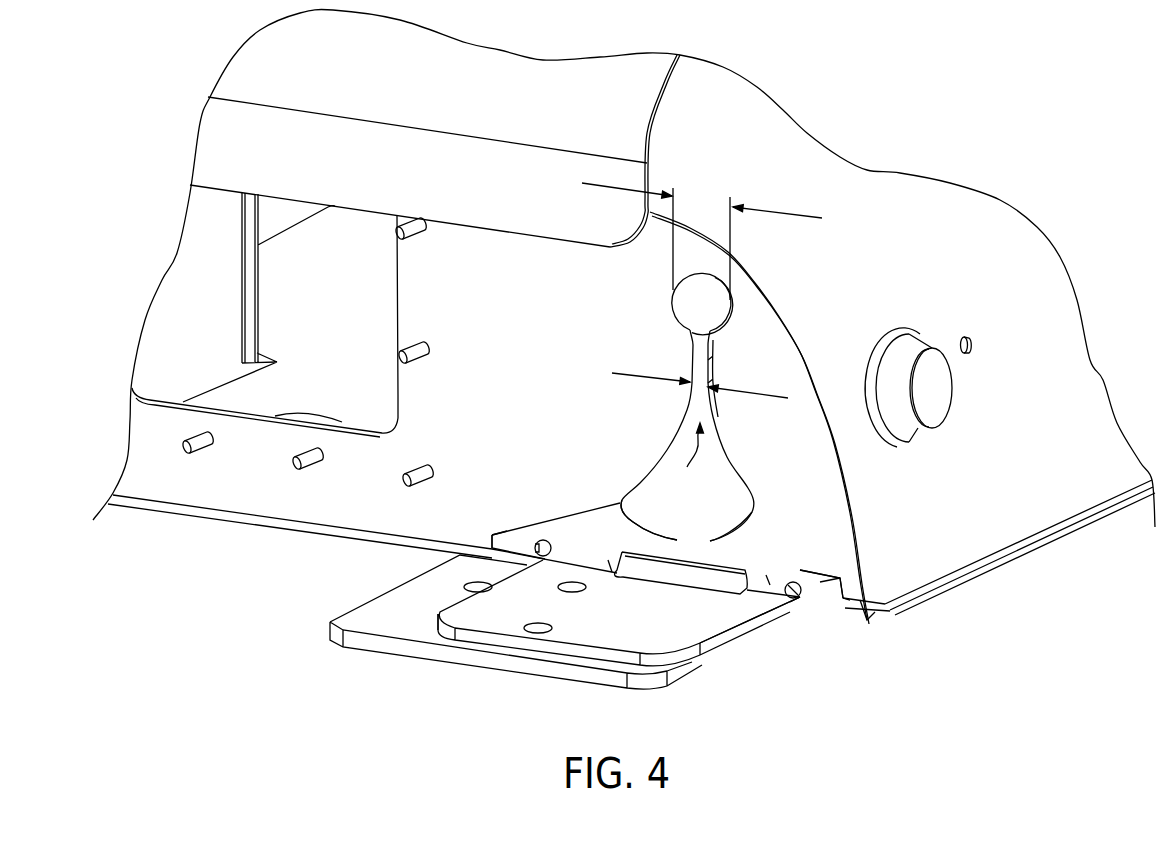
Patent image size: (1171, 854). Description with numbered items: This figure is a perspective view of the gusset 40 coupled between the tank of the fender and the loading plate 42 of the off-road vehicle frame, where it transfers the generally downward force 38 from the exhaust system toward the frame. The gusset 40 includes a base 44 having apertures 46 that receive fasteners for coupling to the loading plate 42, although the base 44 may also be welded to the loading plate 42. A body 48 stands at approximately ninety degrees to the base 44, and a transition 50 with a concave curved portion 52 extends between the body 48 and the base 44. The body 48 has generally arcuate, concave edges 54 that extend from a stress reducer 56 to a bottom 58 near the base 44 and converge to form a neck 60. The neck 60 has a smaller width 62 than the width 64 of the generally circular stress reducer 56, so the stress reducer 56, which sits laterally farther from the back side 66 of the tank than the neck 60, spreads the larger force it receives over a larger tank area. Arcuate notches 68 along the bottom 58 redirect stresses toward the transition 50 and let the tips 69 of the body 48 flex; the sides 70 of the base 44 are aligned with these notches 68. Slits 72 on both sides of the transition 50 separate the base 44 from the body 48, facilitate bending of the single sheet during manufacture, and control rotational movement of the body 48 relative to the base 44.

The force 38 is at (1102, 182).
The gusset 40 is at (872, 645).
The loading plate 42 is at (328, 628).
The base 44 is at (590, 647).
The apertures 46 is at (573, 593).
The body 48 is at (675, 524).
The transition 50 is at (750, 606).
The curved portion 52 is at (680, 570).
The edges 54 is at (686, 526).
The stress reducer 56 is at (713, 316).
The bottom 58 is at (577, 565).
The neck 60 is at (690, 462).
The width 62 is at (647, 380).
The width 64 is at (622, 190).
The back side 66 is at (928, 612).
The notches 68 is at (540, 544).
The tips 69 is at (517, 543).
The sides 70 is at (456, 604).
The slits 72 is at (622, 557).